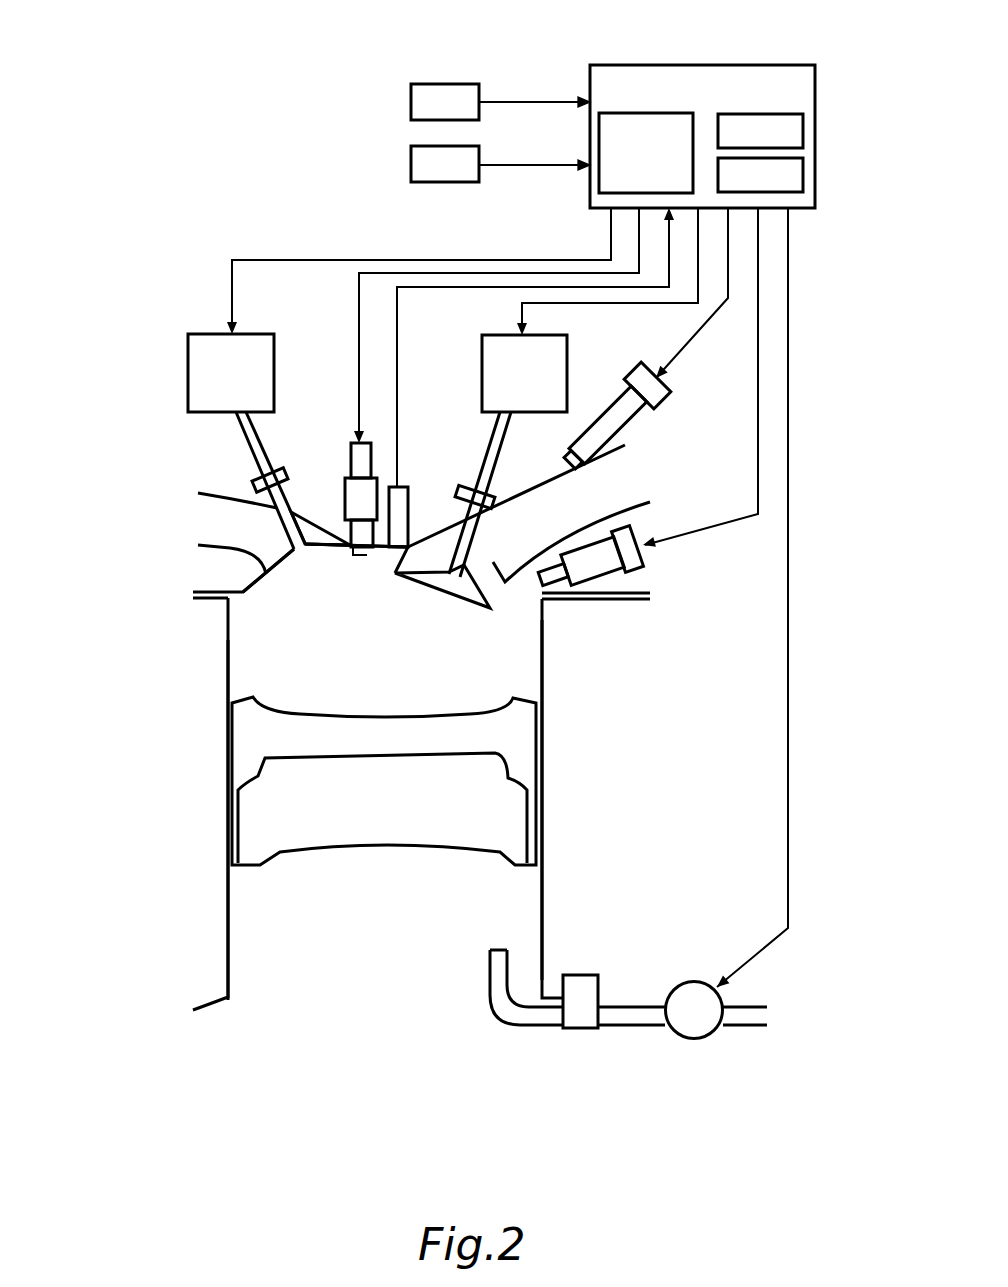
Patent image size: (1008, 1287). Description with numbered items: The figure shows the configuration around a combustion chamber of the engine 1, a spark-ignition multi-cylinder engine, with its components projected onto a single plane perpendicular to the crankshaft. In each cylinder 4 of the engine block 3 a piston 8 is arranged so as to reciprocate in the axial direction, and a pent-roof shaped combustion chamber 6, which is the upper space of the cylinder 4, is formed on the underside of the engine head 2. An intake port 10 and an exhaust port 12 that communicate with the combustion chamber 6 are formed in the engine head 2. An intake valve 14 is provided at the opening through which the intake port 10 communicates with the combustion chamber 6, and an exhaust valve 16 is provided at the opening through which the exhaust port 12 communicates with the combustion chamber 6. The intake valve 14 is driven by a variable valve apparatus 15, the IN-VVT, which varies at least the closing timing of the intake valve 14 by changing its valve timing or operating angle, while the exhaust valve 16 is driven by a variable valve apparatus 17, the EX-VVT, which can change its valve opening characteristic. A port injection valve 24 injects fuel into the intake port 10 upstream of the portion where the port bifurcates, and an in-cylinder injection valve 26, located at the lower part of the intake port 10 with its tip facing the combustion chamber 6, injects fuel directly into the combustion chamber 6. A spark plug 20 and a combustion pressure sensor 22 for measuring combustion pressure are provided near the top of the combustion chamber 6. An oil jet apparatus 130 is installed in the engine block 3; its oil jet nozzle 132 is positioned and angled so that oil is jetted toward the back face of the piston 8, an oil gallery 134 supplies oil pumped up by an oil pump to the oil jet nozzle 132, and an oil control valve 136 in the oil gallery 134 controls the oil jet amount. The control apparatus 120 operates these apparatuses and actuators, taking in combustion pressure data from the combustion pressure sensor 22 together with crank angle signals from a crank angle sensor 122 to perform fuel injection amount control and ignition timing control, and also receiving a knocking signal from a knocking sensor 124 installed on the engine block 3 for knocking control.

The engine 1 is at (148, 294).
The engine head 2 is at (176, 457).
The engine block 3 is at (197, 690).
The cylinder 4 is at (228, 630).
The combustion chamber 6 is at (340, 588).
The piston 8 is at (481, 707).
The intake port 10 is at (573, 535).
The exhaust port 12 is at (232, 547).
The intake valve 14 is at (480, 475).
The variable valve apparatus (IN-VVT) 15 is at (482, 372).
The exhaust valve 16 is at (270, 463).
The variable valve apparatus (EX-VVT) 17 is at (276, 378).
The spark plug 20 is at (343, 490).
The combustion pressure sensor 22 is at (408, 507).
The port injection valve 24 is at (600, 405).
The in-cylinder injection valve 26 is at (612, 574).
The control apparatus 120 is at (696, 65).
The crank angle sensor 122 is at (411, 100).
The knocking sensor 124 is at (411, 164).
The oil jet apparatus 130 is at (591, 1017).
The oil jet nozzle 132 is at (490, 1000).
The oil gallery 134 is at (632, 1028).
The oil control valve (OCV) 136 is at (688, 982).